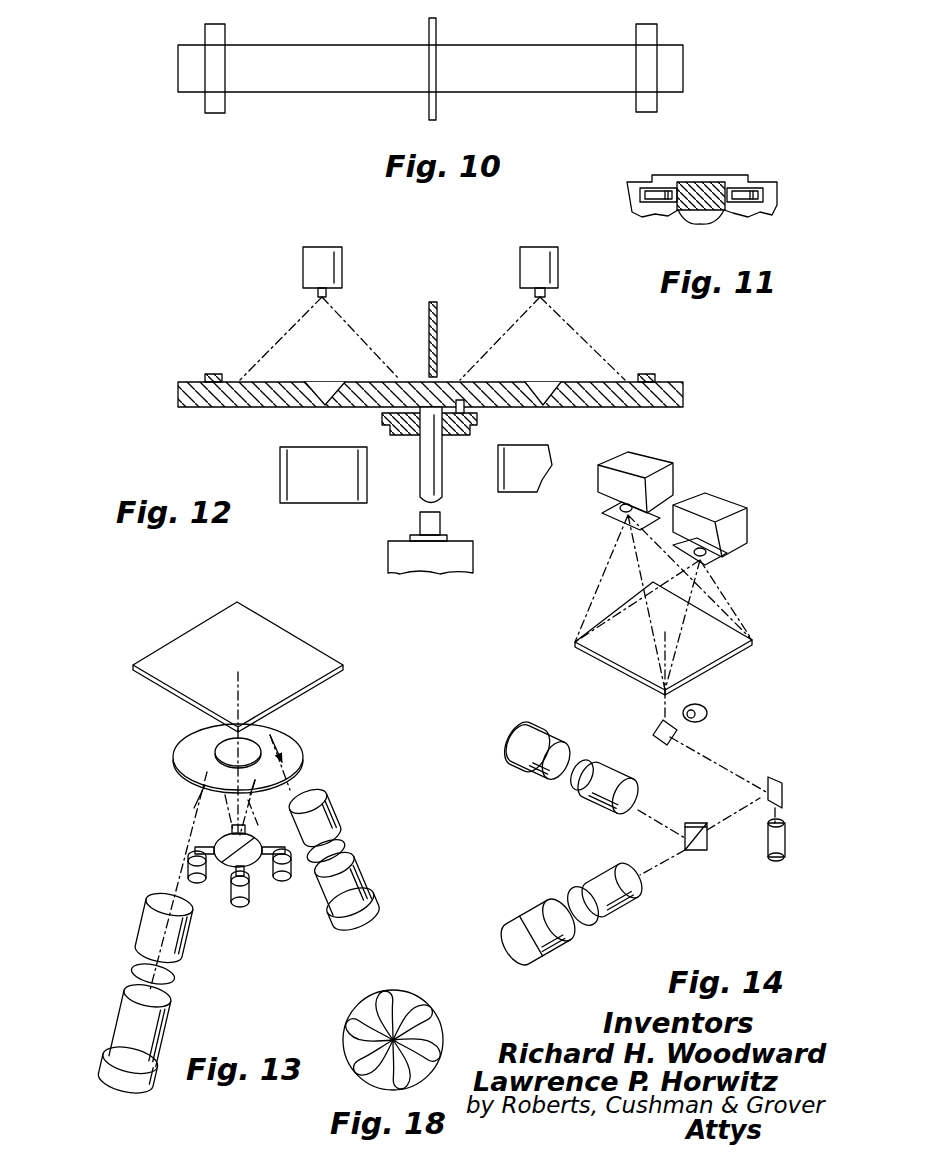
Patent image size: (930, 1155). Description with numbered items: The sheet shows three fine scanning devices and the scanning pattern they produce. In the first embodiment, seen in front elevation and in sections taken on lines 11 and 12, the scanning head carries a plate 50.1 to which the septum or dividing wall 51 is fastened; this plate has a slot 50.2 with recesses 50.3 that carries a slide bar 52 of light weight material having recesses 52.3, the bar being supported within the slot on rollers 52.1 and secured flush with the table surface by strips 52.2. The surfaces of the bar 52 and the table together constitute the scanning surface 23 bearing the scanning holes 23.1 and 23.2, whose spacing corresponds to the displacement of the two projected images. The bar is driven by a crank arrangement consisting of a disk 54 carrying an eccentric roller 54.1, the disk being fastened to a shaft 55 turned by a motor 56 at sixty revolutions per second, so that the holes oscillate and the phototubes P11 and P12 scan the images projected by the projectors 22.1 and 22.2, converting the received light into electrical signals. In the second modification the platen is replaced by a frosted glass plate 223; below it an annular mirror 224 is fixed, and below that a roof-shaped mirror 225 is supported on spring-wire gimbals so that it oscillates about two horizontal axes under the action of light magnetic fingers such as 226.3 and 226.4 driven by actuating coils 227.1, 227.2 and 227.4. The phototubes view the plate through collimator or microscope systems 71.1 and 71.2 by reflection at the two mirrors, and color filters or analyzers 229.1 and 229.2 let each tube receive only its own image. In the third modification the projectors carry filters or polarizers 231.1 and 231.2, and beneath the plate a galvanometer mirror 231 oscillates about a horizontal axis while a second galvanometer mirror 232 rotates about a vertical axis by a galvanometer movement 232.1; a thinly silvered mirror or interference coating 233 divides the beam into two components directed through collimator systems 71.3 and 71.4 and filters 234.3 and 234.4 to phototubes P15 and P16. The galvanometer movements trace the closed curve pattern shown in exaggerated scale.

In FIG. 10, the section line 11— 11 is at (275, 15).
In FIG. 10, the section line 12— 12 is at (145, 55).
In FIG. 11, the scanning surface 23 is at (623, 183).
In FIG. 12, the scanning surface 23 is at (588, 380).
In FIG. 10, the scanning hole 23.1 is at (322, 68).
In FIG. 12, the scanning hole 23.1 is at (328, 368).
In FIG. 10, the scanning hole 23.2 is at (541, 66).
In FIG. 12, the scanning hole 23.2 is at (544, 382).
In FIG. 10, the septum 51 is at (436, 38).
In FIG. 12, the septum 51 is at (437, 307).
In FIG. 10, the slide bar 52 is at (594, 52).
In FIG. 11, the slide bar 52 is at (700, 183).
In FIG. 12, the slide bar 52 is at (683, 386).
In FIG. 11, the rollers 52.1 is at (648, 190).
In FIG. 12, the rollers 52.1 is at (213, 378).
In FIG. 12, the strips 52.2 is at (648, 374).
In FIG. 11, the recesses 52.3 is at (722, 185).
In FIG. 11, the plate 50.1 is at (770, 180).
In FIG. 11, the slot 50.2 is at (695, 224).
In FIG. 11, the recesses 50.3 is at (758, 210).
In FIG. 12, the projector 22.1 is at (303, 265).
In FIG. 14, the projector 22.1 is at (640, 466).
In FIG. 12, the projector 22.2 is at (558, 275).
In FIG. 14, the projector 22.2 is at (720, 505).
In FIG. 12, the disk 54 is at (470, 432).
In FIG. 12, the roller 54.1 is at (458, 400).
In FIG. 12, the shaft 55 is at (420, 495).
In FIG. 12, the motor 56 is at (395, 555).
In FIG. 12, the phototube P11 is at (300, 467).
In FIG. 13, the phototube P11 is at (128, 1030).
In FIG. 12, the phototube P12 is at (535, 452).
In FIG. 13, the phototube P12 is at (364, 884).
In FIG. 14, the phototube P15 is at (546, 737).
In FIG. 14, the phototube P16 is at (556, 958).
In FIG. 14, the frosted glass plate 223 is at (575, 648).
In FIG. 13, the frosted glass plate 223 is at (180, 642).
In FIG. 13, the annular mirror 224 is at (188, 745).
In FIG. 13, the roof-shaped mirror 225 is at (232, 866).
In FIG. 13, the magnetic finger 226.3 is at (225, 830).
In FIG. 13, the magnetic finger 226.4 is at (205, 850).
In FIG. 13, the actuating coil 227.1 is at (250, 898).
In FIG. 13, the actuating coil 227.2 is at (290, 878).
In FIG. 13, the actuating coil 227.4 is at (187, 868).
In FIG. 13, the color filter or analyzer 229.1 is at (170, 982).
In FIG. 13, the color filter or analyzer 229.2 is at (344, 850).
In FIG. 13, the collimator or microscope system 71.1 is at (178, 958).
In FIG. 13, the collimator or microscope system 71.2 is at (312, 800).
In FIG. 14, the collimator or microscope system 71.3 is at (592, 800).
In FIG. 14, the collimator or microscope system 71.4 is at (617, 905).
In FIG. 14, the galvanometer mirror 231 is at (680, 732).
In FIG. 14, the galvanometer movement 231.1 is at (605, 514).
In FIG. 14, the color filter or polarizer 231.2 is at (727, 555).
In FIG. 14, the galvanometer mirror 232 is at (780, 780).
In FIG. 14, the galvanometer movement 232.1 is at (776, 858).
In FIG. 14, the thinly silvered mirror or optical interference coating 233 is at (700, 850).
In FIG. 14, the filter or analyzer 234.3 is at (584, 765).
In FIG. 14, the filter or analyzer 234.4 is at (585, 922).